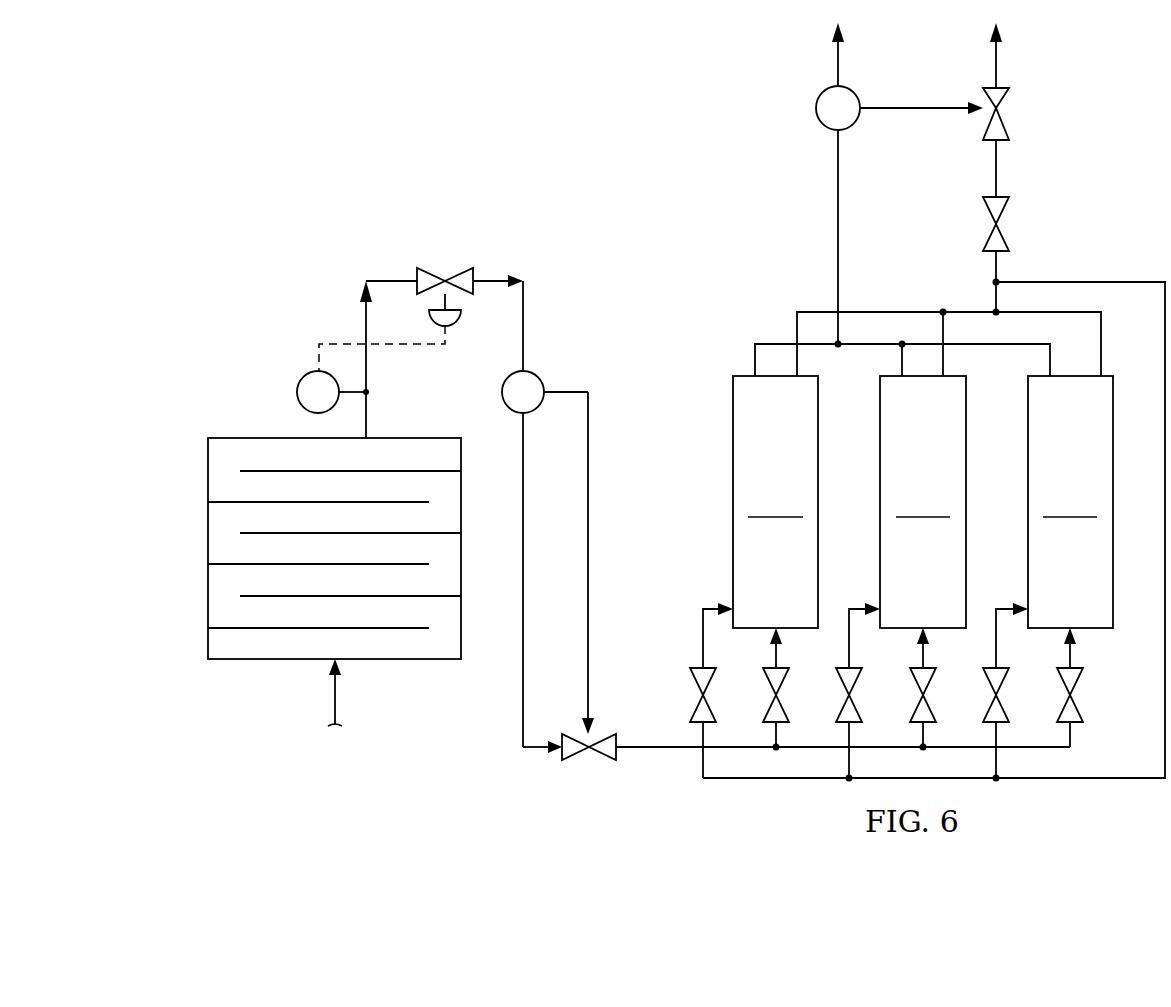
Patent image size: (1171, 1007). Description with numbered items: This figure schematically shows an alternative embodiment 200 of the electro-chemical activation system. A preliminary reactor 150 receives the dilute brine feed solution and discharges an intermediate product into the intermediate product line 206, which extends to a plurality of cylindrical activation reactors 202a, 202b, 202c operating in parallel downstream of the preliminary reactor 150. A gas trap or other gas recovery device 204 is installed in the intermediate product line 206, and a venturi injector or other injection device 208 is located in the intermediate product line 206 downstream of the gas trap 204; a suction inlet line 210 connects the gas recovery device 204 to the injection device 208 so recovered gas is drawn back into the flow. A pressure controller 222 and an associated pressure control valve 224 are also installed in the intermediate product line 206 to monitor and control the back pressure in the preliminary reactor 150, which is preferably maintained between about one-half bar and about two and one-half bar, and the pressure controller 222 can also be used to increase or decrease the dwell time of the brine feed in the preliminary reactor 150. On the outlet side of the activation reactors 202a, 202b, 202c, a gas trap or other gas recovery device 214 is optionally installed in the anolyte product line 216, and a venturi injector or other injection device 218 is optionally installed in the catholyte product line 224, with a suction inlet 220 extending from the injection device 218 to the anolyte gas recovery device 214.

The preliminary reactor 150 is at (208, 550).
The alternative embodiment of the activation system 200 is at (356, 112).
The cylindrical activation reactor 202a is at (917, 470).
The cylindrical activation reactor 202b is at (940, 469).
The cylindrical activation reactor 202c is at (1070, 502).
The gas trap or gas recovery device 204 is at (502, 392).
The intermediate product line 206 is at (662, 750).
The venturi injector or injection device 208 is at (601, 762).
The suction inlet line 210 is at (588, 563).
The gas trap or gas recovery device 214 is at (852, 93).
The anolyte product line 216 is at (841, 240).
The venturi injector or injection device 218 is at (1012, 102).
The suction inlet 220 is at (930, 106).
The pressure controller 222 is at (297, 392).
The pressure control valve 224 is at (458, 272).